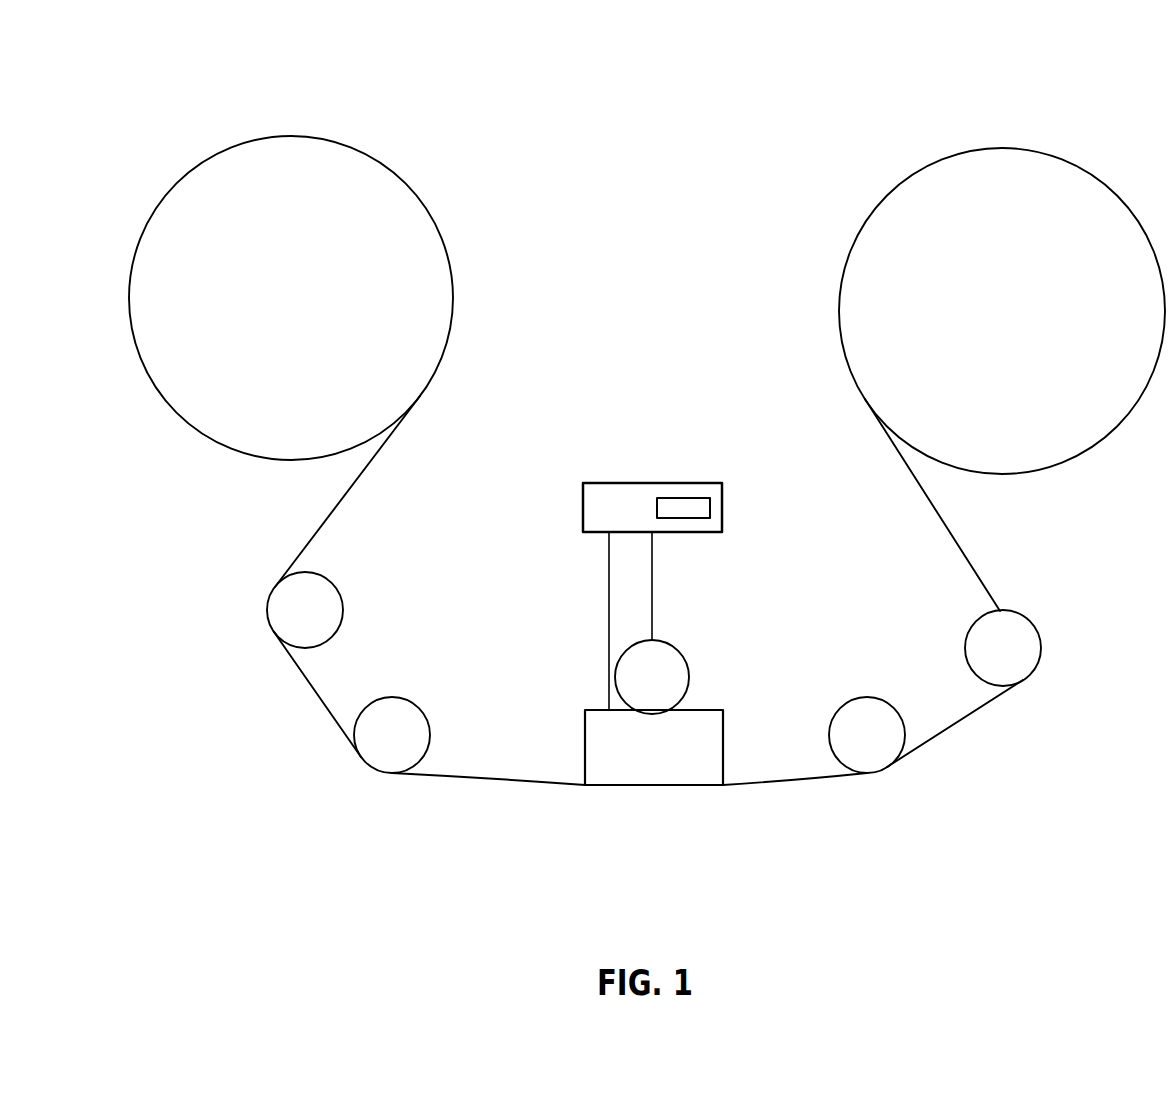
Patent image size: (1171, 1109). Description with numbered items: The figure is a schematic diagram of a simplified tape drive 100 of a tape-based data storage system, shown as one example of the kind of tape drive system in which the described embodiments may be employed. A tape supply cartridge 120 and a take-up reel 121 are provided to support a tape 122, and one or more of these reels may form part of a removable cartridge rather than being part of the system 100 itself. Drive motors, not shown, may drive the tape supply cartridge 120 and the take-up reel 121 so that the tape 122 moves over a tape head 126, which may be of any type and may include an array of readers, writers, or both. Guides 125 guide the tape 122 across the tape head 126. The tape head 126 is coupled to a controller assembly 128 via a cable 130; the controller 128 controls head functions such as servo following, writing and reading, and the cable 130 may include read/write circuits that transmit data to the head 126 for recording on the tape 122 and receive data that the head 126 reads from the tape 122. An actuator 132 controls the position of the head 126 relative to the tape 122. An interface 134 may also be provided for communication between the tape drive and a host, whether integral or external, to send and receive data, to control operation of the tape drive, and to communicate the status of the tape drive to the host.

The tape drive 100 is at (256, 534).
The tape supply cartridge 120 is at (452, 264).
The take-up reel 121 is at (1103, 440).
The tape 122 is at (495, 780).
The guides 125 is at (392, 697).
The tape head 126 is at (723, 743).
The controller assembly 128 is at (651, 483).
The cable 130 is at (609, 671).
The actuator 132 is at (683, 648).
The interface 134 is at (698, 498).